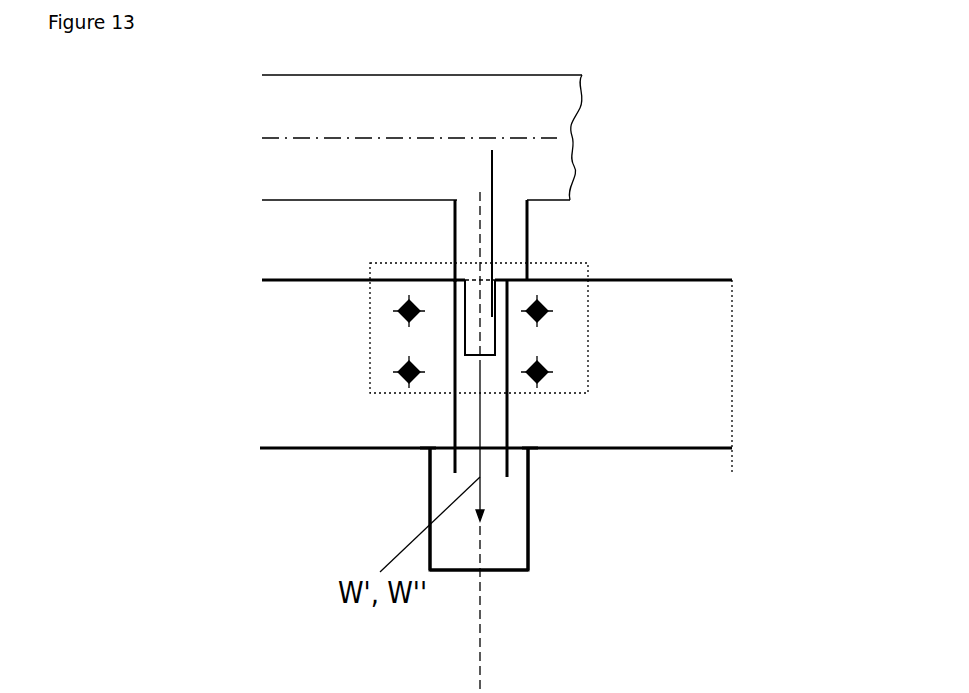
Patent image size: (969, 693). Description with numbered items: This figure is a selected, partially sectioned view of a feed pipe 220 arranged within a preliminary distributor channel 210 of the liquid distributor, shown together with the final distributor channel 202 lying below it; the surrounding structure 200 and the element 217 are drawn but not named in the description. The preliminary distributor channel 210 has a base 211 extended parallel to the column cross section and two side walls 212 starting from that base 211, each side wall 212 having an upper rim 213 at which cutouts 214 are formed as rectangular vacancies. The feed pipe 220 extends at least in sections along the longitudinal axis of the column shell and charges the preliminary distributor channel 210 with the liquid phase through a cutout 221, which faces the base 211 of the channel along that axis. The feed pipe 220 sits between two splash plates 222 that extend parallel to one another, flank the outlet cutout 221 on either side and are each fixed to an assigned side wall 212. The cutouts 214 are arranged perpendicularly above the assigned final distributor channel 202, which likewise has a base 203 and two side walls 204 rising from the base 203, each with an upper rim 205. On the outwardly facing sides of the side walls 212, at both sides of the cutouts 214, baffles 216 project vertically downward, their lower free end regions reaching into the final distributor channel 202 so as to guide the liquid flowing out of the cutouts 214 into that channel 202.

The wall structure 200 is at (708, 279).
The final distributor channel 202 is at (502, 572).
The base 203 is at (453, 570).
The side walls 204 is at (428, 508).
The upper rim 205 is at (427, 450).
The preliminary distributor channel 210 is at (668, 446).
The base 211 is at (302, 450).
The side walls 212 is at (313, 345).
The upper rim 213 is at (337, 280).
The cutouts 214 is at (465, 345).
The baffle 216 is at (456, 413).
The U-shaped bracket 217 is at (478, 337).
The feed pipe 220 is at (453, 225).
The cutout 221 is at (483, 270).
The splash plates 222 is at (569, 273).